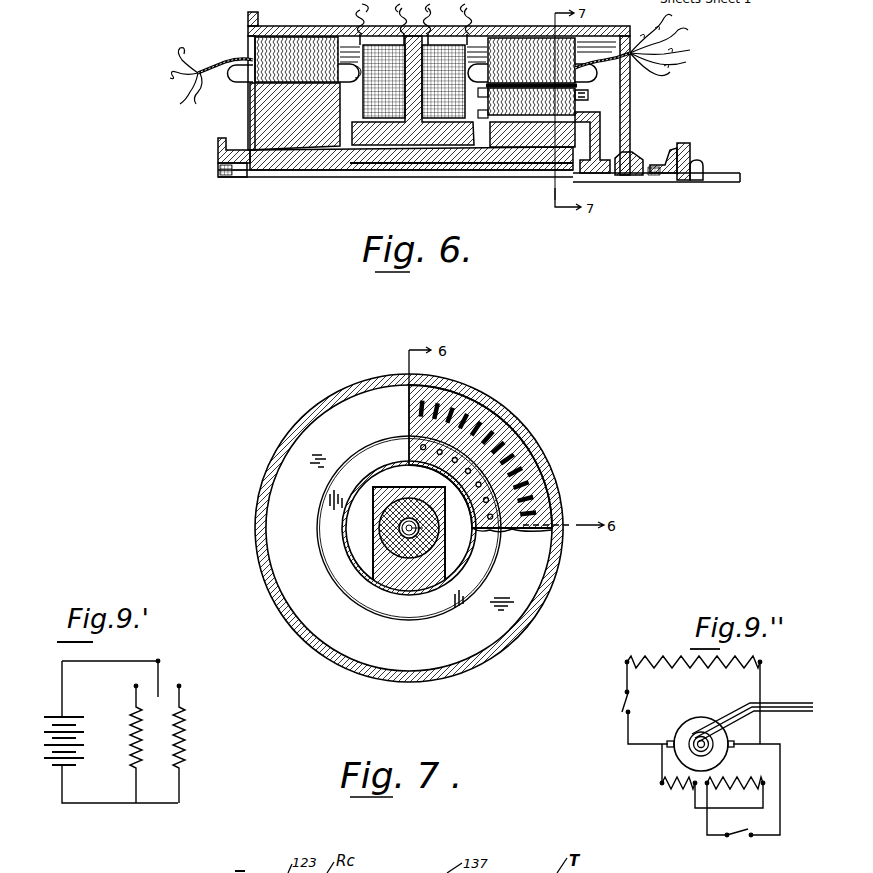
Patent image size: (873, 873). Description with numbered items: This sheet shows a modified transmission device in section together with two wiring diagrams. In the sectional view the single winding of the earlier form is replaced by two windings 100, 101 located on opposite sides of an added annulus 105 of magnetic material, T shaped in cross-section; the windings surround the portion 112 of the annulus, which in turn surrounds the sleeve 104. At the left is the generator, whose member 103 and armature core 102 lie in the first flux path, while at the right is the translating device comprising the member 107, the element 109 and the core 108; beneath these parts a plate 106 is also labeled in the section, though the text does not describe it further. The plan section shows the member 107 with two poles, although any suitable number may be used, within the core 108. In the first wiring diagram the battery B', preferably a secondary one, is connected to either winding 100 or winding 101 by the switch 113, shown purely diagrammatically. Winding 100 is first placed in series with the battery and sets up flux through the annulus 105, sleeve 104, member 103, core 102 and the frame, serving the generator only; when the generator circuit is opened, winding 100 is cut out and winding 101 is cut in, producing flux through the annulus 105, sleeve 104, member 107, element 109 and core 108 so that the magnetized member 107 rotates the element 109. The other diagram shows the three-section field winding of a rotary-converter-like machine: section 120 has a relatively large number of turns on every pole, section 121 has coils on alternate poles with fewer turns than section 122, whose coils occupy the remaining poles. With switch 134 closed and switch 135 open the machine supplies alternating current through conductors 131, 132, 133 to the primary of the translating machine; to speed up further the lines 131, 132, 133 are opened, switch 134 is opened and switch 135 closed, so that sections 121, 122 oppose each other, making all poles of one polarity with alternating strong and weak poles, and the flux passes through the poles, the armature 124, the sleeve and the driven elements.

In FIG. 6, the winding 100 is at (377, 52).
In FIG. 9', the winding 100 is at (128, 745).
In FIG. 6, the winding 101 is at (437, 50).
In FIG. 9', the winding 101 is at (186, 746).
In FIG. 6, the armature core 102 is at (243, 40).
In FIG. 6, the member 103 is at (265, 93).
In FIG. 6, the sleeve 104 is at (302, 165).
In FIG. 7, the sleeve 104 is at (391, 518).
In FIG. 6, the annulus 105 is at (404, 148).
In FIG. 6, the plate 106 is at (515, 165).
In FIG. 6, the member 107 is at (577, 140).
In FIG. 7, the member 107 is at (463, 527).
In FIG. 6, the core 108 is at (515, 42).
In FIG. 7, the core 108 is at (520, 448).
In FIG. 6, the element 109 is at (588, 96).
In FIG. 6, the portion of the annulus 112 is at (353, 137).
In FIG. 9', the switch 113 is at (160, 688).
In FIG. 9', the battery B' is at (68, 751).
In FIG. 9'', the field winding section 120 is at (688, 666).
In FIG. 9'', the field winding section 121 is at (673, 790).
In FIG. 9'', the field winding section 122 is at (748, 790).
In FIG. 9'', the armature 124 is at (727, 752).
In FIG. 9'', the conductor 131 is at (776, 704).
In FIG. 9'', the conductor 132 is at (786, 707).
In FIG. 9'', the conductor 133 is at (786, 713).
In FIG. 9'', the switch 134 is at (622, 702).
In FIG. 9'', the switch 135 is at (735, 836).